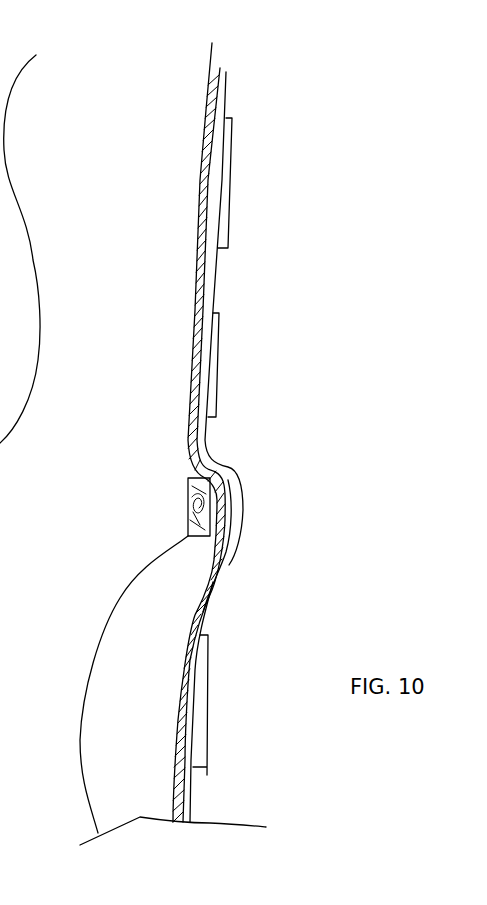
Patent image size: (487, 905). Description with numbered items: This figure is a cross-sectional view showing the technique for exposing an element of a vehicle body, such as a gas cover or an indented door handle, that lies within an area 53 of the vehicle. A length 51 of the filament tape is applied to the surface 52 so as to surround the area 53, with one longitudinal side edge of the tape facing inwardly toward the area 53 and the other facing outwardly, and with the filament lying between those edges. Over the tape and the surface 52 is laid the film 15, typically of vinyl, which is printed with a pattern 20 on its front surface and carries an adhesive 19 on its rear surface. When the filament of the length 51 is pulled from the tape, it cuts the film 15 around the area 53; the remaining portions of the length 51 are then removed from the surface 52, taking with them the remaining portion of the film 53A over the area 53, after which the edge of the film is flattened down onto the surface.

The film 15 is at (220, 460).
The adhesive 19 is at (222, 492).
The pattern 20 is at (215, 368).
The length of the tape 51 is at (0, 443).
The surface 52 is at (194, 346).
The area 53 is at (86, 683).
The remaining portion of the film 53A is at (211, 584).